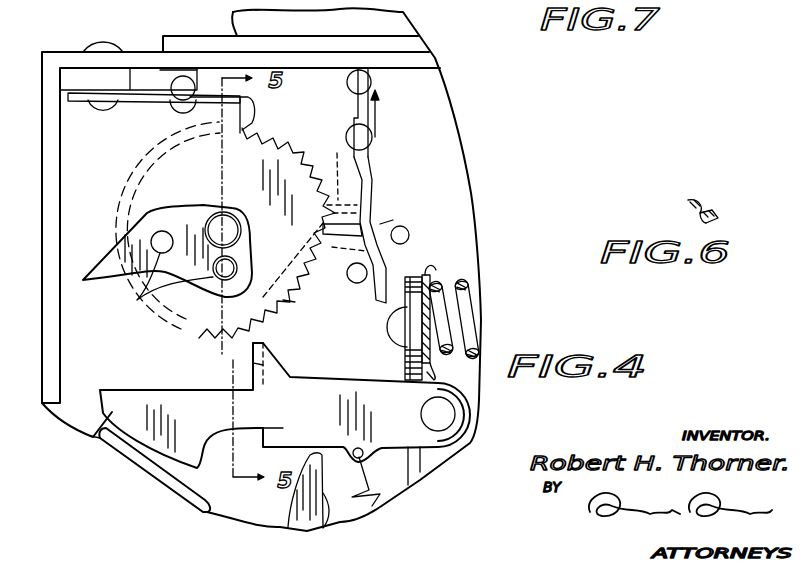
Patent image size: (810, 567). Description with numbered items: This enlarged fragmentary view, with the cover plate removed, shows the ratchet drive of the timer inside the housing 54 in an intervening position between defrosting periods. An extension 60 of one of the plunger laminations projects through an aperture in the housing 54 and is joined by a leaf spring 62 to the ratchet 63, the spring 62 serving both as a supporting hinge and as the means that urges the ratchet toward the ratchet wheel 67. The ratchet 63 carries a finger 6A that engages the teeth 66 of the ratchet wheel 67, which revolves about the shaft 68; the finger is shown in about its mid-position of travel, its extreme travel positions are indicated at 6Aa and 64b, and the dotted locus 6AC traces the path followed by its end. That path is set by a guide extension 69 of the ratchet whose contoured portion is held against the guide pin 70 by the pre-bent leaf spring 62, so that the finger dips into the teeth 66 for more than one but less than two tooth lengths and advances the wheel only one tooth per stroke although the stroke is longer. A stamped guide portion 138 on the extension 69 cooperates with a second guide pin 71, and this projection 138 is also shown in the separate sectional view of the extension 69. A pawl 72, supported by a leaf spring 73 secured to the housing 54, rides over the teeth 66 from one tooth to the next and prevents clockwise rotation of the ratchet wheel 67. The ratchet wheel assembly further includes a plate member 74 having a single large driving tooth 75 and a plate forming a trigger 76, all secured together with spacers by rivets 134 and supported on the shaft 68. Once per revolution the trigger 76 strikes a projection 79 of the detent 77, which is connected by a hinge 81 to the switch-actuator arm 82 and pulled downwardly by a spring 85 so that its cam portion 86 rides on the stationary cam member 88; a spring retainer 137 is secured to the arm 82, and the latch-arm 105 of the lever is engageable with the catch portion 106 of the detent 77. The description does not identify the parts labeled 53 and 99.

In FIG. 4, the housing top wall 53 is at (237, 35).
In FIG. 4, the housing 54 is at (134, 52).
In FIG. 4, the pawl 72 is at (200, 98).
In FIG. 4, the leaf spring 73 is at (143, 102).
In FIG. 4, the ratchet wheel 67 is at (173, 157).
In FIG. 4, the teeth 66 is at (262, 116).
In FIG. 4, the extension 60 is at (357, 95).
In FIG. 4, the leaf spring 62 is at (367, 112).
In FIG. 4, the ratchet member 63 is at (367, 173).
In FIG. 4, the extreme travel position of finger 64b is at (290, 158).
In FIG. 4, the finger 6A is at (350, 222).
In FIG. 4, the locus of finger end 6AC is at (395, 221).
In FIG. 4, the extreme travel position of finger 6Aa is at (309, 304).
In FIG. 4, the second guide pin 71 is at (409, 236).
In FIG. 4, the plate member 74 is at (273, 310).
In FIG. 4, the guide pin 70 is at (357, 283).
In FIG. 4, the guide extension 69 is at (370, 305).
In FIG. 6, the guide extension 69 is at (706, 222).
In FIG. 4, the shaft 68 is at (217, 207).
In FIG. 4, the trigger 76 is at (112, 258).
In FIG. 4, the rivets 134 is at (137, 300).
In FIG. 4, the stamped projection 138 is at (375, 270).
In FIG. 6, the stamped projection 138 is at (688, 202).
In FIG. 4, the spring retainer 137 is at (437, 268).
In FIG. 4, the coil springs 99 is at (470, 283).
In FIG. 4, the detent 77 is at (137, 390).
In FIG. 4, the driving tooth 75 is at (227, 347).
In FIG. 4, the projection 79 is at (253, 364).
In FIG. 4, the catch portion 106 is at (270, 433).
In FIG. 4, the hinge 81 is at (448, 413).
In FIG. 4, the switch-actuator arm 82 is at (422, 465).
In FIG. 4, the spring 85 is at (383, 503).
In FIG. 4, the cam portion 86 is at (90, 436).
In FIG. 4, the stationary cam member 88 is at (208, 514).
In FIG. 4, the latch-arm 105 is at (327, 527).